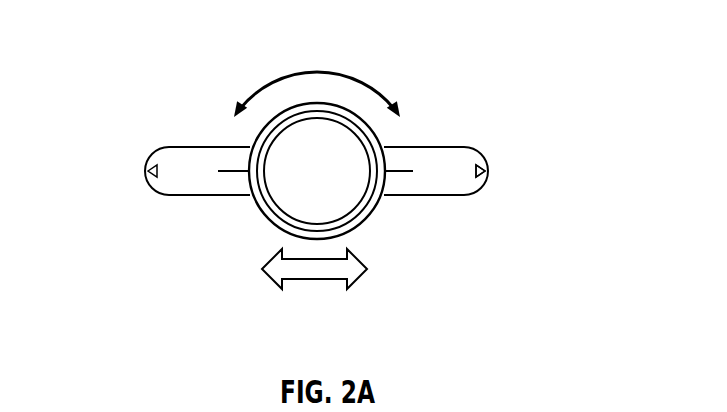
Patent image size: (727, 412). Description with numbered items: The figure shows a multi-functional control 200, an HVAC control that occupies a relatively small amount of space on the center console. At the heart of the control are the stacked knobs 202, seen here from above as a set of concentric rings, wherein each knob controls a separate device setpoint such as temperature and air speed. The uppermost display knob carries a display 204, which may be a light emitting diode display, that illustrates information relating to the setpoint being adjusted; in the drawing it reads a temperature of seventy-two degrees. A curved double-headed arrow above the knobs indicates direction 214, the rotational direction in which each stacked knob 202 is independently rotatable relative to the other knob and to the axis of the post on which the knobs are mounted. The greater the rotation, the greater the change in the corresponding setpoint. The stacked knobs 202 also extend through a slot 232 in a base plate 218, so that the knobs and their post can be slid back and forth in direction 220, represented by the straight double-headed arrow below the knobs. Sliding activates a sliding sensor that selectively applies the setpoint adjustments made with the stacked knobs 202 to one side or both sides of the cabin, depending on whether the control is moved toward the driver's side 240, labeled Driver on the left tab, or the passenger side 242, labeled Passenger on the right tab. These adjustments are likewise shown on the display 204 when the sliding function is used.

The multi-functional control 200 is at (463, 43).
The stacked knobs 202 is at (366, 222).
The display 204 is at (260, 140).
The direction 214 is at (317, 71).
The base plate 218 is at (484, 150).
The direction 220 is at (313, 281).
The slot 232 is at (392, 171).
The driver's side 240 is at (145, 168).
The passenger side 242 is at (489, 172).